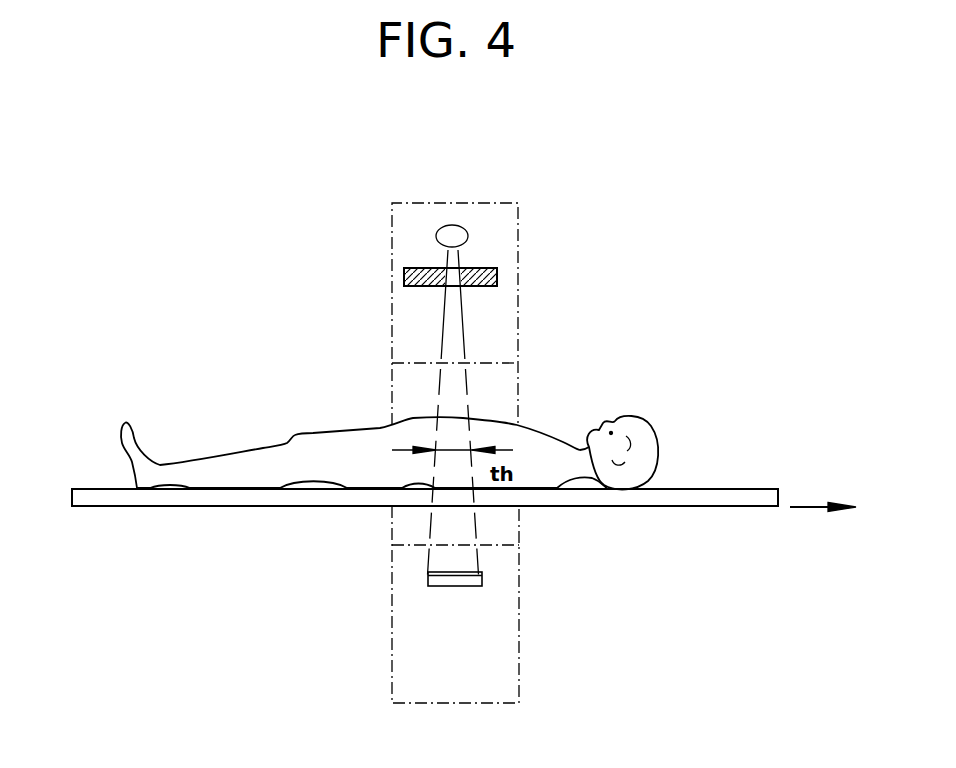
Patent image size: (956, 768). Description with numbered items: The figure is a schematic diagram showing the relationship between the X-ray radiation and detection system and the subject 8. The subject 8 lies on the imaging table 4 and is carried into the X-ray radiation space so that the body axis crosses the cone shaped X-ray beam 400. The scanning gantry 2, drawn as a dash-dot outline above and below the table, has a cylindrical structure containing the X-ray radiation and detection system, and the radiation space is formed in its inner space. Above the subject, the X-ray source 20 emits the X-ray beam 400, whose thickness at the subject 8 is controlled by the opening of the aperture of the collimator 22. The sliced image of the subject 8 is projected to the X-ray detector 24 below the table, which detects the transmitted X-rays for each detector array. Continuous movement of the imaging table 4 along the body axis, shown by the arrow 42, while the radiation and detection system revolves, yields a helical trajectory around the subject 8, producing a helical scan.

The scanning gantry 2 is at (438, 201).
The X-ray source 20 is at (462, 228).
The collimator 22 is at (486, 268).
The X-ray beam 400 is at (482, 378).
The imaging table 4 is at (698, 489).
The arrow 42 is at (810, 506).
The X-ray detector 24 is at (482, 580).
The subject 8 is at (640, 418).